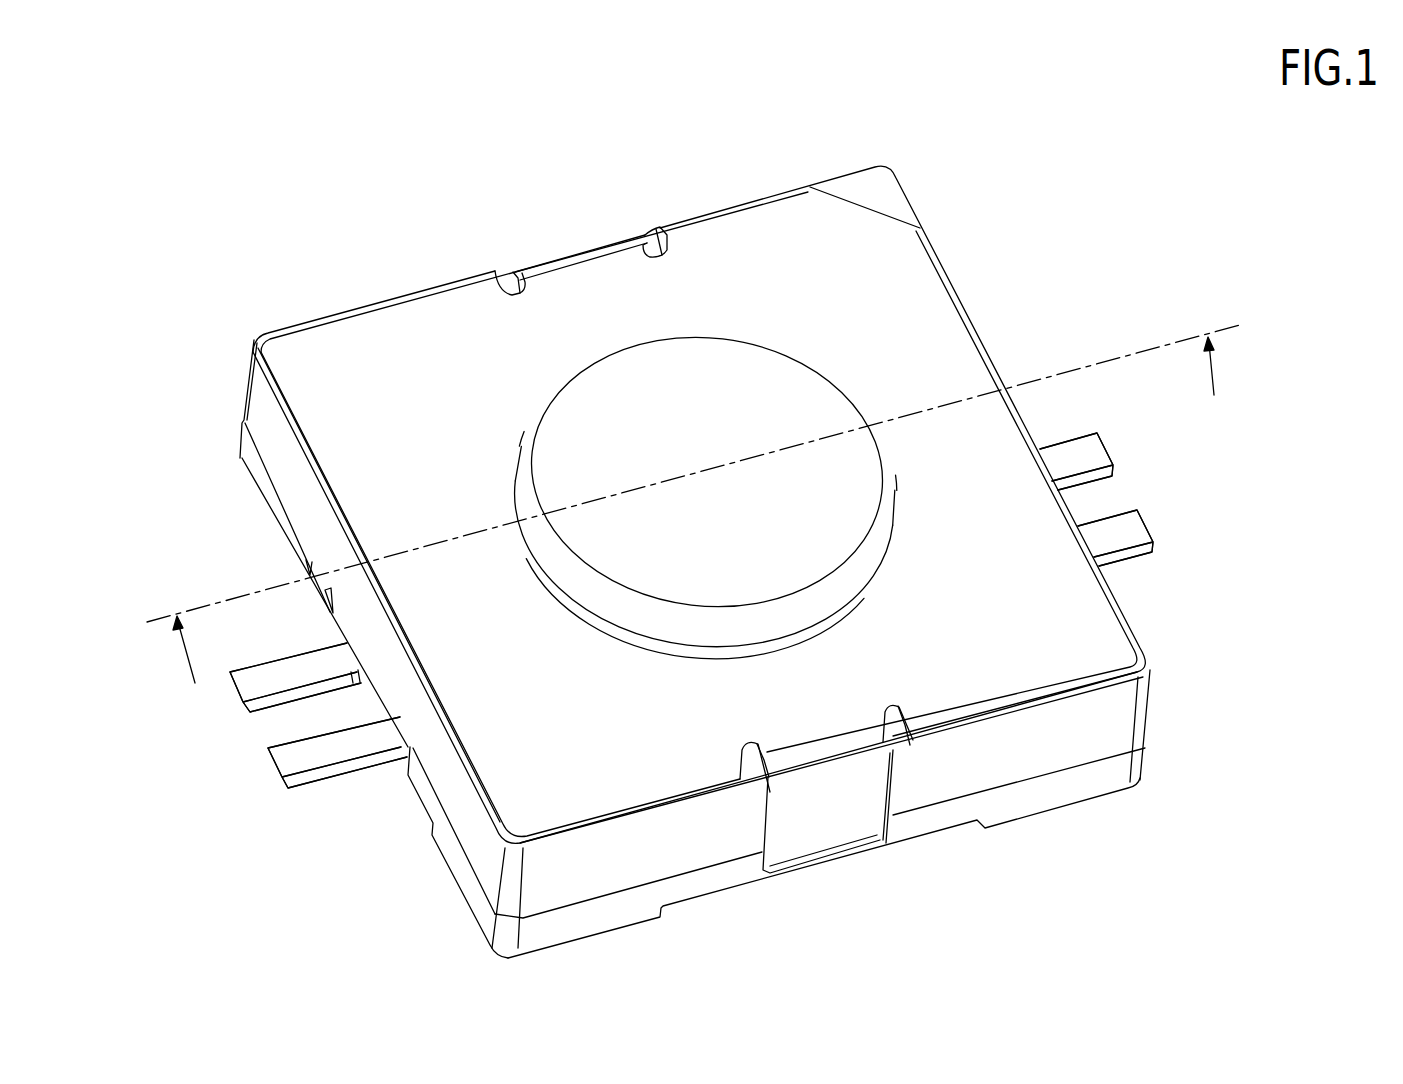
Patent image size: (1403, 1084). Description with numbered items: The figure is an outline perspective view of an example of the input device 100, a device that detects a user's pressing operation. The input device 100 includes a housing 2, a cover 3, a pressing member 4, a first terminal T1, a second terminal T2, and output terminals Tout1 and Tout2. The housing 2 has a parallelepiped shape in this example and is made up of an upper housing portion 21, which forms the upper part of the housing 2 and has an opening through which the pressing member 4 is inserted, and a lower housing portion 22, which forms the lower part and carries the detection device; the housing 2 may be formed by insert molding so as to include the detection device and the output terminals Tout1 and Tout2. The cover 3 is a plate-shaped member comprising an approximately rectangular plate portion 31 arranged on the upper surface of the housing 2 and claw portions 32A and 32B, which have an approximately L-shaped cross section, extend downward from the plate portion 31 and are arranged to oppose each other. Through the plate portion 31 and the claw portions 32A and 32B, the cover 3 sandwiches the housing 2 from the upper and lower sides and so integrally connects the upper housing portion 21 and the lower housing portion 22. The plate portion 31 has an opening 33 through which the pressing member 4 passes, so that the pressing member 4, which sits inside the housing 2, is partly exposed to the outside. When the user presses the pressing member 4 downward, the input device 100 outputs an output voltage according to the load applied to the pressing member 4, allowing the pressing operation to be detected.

The input device 100 is at (917, 133).
The housing 2 is at (362, 855).
The upper housing portion 21 is at (470, 828).
The lower housing portion 22 is at (475, 900).
The cover 3 is at (960, 315).
The plate portion 31 is at (699, 504).
The claw portion 32A is at (575, 262).
The claw portion 32B is at (828, 808).
The opening 33 is at (520, 497).
The pressing member 4 is at (732, 360).
The first terminal T1 is at (1100, 450).
The second terminal T2 is at (1138, 530).
The output terminal Tout1 is at (255, 685).
The output terminal Tout2 is at (284, 760).